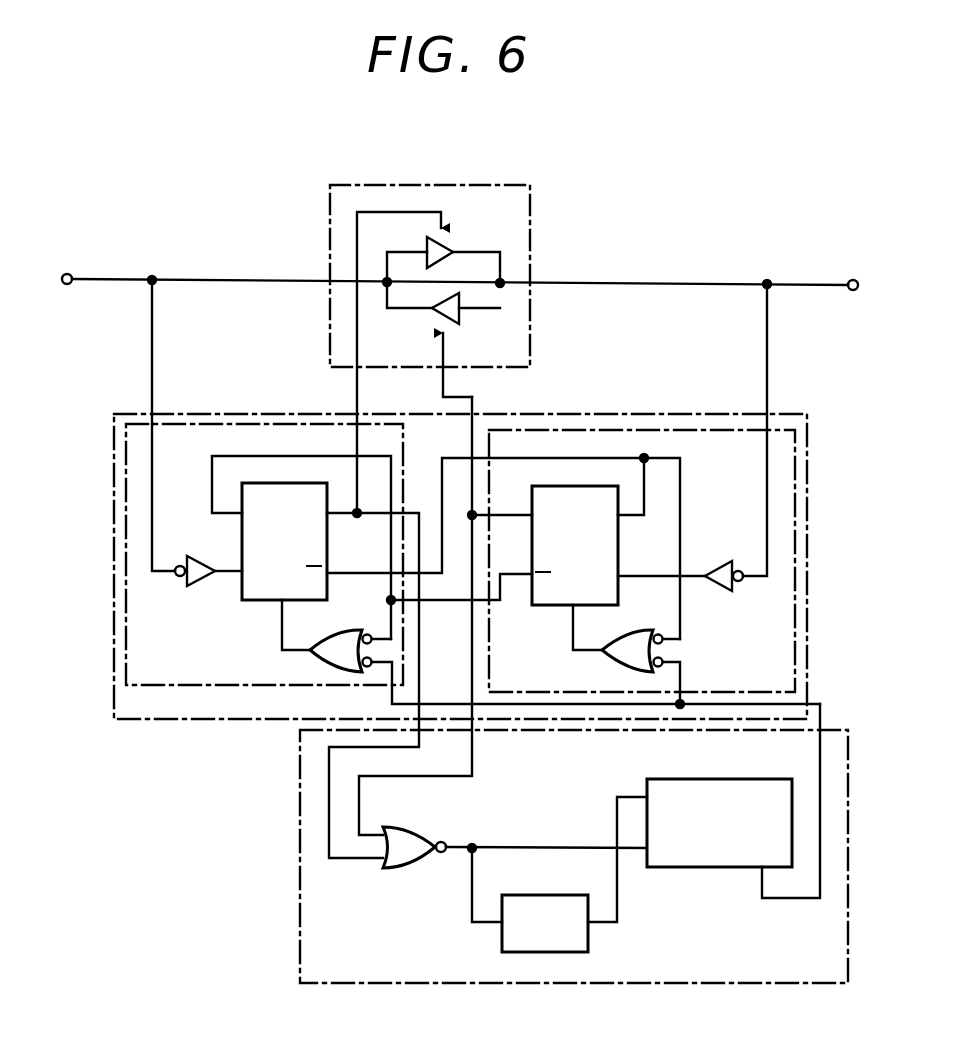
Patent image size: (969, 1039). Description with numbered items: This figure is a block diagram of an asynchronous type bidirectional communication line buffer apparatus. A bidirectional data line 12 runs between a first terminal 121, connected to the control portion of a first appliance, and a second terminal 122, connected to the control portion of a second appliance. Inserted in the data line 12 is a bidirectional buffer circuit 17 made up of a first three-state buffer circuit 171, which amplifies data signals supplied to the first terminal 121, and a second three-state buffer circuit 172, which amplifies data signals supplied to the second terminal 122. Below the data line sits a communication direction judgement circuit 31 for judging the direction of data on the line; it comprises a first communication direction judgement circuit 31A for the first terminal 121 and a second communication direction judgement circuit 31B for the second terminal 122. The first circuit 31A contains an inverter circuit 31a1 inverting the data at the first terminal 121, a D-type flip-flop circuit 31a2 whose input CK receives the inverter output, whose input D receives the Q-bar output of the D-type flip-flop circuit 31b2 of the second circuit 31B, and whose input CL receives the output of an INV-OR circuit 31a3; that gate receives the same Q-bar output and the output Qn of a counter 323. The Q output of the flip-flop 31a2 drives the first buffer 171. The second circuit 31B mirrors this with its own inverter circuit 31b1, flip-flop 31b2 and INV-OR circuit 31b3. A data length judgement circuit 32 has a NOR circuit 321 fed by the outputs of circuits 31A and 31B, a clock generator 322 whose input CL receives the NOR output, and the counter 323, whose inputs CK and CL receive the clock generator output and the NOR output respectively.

The bidirectional data line 12 is at (250, 279).
The first terminal 121 is at (72, 272).
The second terminal 122 is at (853, 278).
The bidirectional buffer circuit 17 is at (465, 349).
The first three-state buffer circuit 171 is at (456, 243).
The second three-state buffer circuit 172 is at (422, 345).
The communication direction judgement circuit 31 is at (236, 412).
The first communication direction judgement circuit 31A is at (126, 472).
The second communication direction judgement circuit 31B is at (807, 444).
The inverter circuit 31a1 is at (200, 553).
The D-type flip-flop circuit 31a2 is at (240, 594).
The INV-OR circuit 31a3 is at (312, 658).
The inverter circuit 31b1 is at (722, 560).
The D-type flip-flop circuit 31b2 is at (542, 608).
The INV-OR circuit 31b3 is at (663, 650).
The data length judgement circuit 32 is at (300, 848).
The NOR circuit 321 is at (391, 871).
The clock generator 322 is at (590, 945).
The counter 323 is at (723, 869).